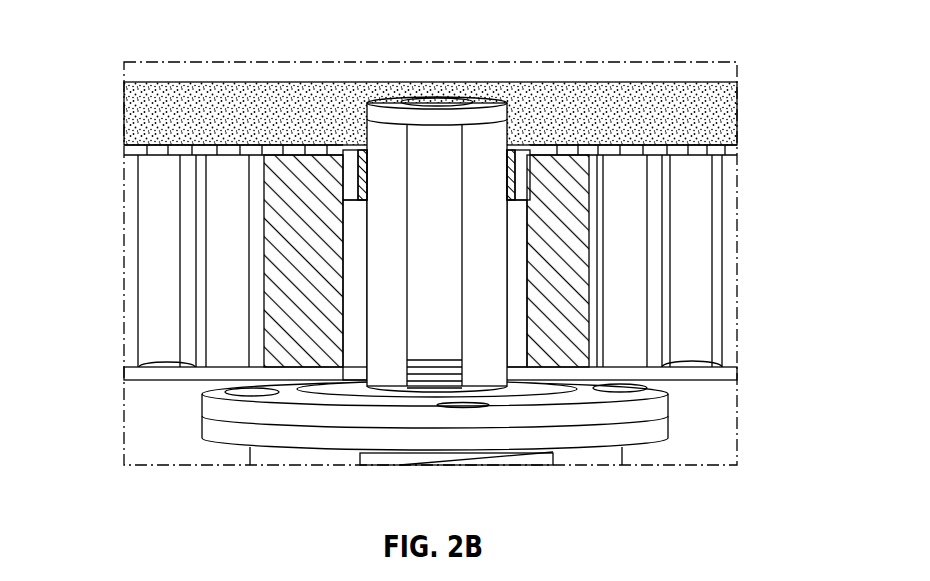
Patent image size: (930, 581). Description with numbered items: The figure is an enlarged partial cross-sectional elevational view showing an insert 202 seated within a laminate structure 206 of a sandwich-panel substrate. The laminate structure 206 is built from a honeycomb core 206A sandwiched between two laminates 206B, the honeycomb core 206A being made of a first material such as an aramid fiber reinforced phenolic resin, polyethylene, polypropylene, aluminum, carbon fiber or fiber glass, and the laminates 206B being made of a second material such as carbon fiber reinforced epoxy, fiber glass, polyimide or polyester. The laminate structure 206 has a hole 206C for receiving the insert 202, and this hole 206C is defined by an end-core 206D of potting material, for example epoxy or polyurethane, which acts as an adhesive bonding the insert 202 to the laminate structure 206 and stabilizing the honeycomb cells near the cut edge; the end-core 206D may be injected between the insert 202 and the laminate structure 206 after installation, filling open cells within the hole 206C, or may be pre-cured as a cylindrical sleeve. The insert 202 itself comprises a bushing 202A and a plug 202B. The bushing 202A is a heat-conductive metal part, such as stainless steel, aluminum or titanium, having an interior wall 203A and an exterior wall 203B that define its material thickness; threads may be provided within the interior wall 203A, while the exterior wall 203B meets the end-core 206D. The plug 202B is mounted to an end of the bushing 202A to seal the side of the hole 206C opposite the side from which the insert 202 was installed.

The insert 202 is at (282, 258).
The bushing 202A is at (383, 142).
The plug 202B is at (355, 140).
The interior wall 203A is at (407, 345).
The exterior wall 203B is at (365, 291).
The laminate structure 206 is at (638, 105).
The honeycomb core 206A is at (152, 257).
The laminate 206B is at (723, 111).
The hole 206C is at (353, 357).
The end-core 206D is at (280, 333).